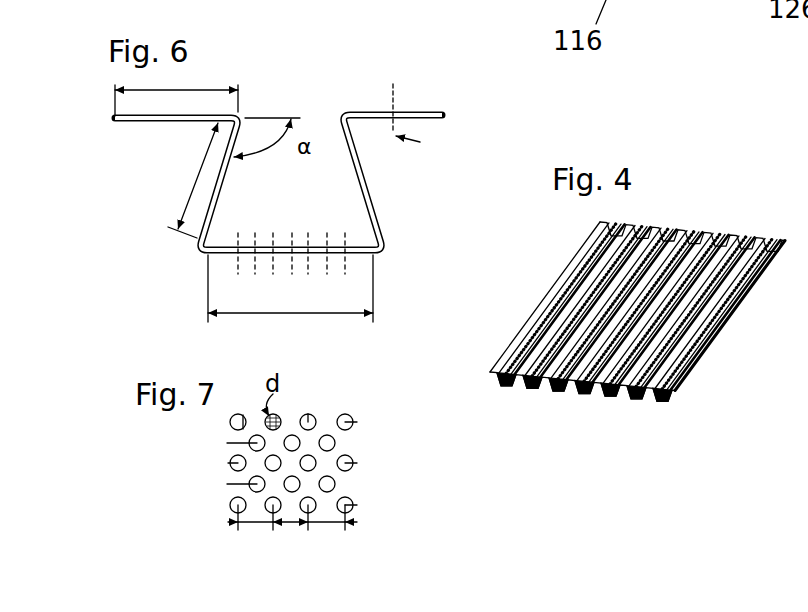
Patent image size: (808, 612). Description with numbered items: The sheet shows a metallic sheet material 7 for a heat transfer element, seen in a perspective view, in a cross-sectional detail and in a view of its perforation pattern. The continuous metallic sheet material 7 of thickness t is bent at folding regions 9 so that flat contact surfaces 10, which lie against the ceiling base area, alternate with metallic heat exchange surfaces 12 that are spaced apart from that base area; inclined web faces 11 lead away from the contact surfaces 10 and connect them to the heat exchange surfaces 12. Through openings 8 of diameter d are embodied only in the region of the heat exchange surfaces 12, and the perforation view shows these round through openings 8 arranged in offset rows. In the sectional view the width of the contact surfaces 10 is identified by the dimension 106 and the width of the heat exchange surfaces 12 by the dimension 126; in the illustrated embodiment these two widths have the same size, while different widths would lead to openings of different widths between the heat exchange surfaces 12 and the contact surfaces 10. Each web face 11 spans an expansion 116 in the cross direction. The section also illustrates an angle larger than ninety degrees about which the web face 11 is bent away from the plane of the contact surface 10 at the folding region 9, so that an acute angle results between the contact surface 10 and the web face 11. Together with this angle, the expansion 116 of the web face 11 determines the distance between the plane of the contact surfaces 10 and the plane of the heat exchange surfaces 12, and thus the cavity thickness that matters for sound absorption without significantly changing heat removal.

In FIG. 6, the metallic sheet material 7 is at (420, 110).
In FIG. 4, the metallic sheet material 7 is at (737, 222).
In FIG. 6, the through openings 8 is at (288, 264).
In FIG. 4, the through openings 8 is at (632, 406).
In FIG. 7, the through openings 8 is at (331, 408).
In FIG. 6, the folding regions 9 is at (246, 116).
In FIG. 4, the folding regions 9 is at (640, 226).
In FIG. 6, the contact surfaces 10 is at (360, 110).
In FIG. 4, the contact surfaces 10 is at (707, 234).
In FIG. 6, the web faces 11 is at (352, 165).
In FIG. 4, the web faces 11 is at (496, 377).
In FIG. 6, the heat exchange surfaces 12 is at (354, 257).
In FIG. 4, the heat exchange surfaces 12 is at (583, 390).
In FIG. 6, the width of the contact surfaces 106 is at (196, 87).
In FIG. 6, the expansion of the web face 116 is at (198, 172).
In FIG. 6, the width of the heat exchange surfaces 126 is at (238, 316).